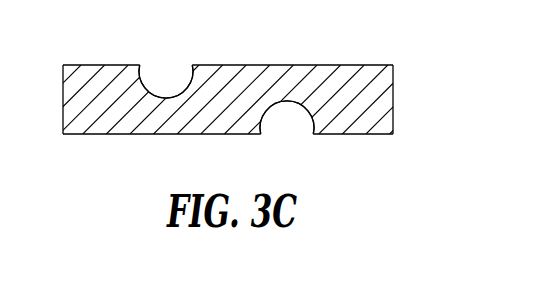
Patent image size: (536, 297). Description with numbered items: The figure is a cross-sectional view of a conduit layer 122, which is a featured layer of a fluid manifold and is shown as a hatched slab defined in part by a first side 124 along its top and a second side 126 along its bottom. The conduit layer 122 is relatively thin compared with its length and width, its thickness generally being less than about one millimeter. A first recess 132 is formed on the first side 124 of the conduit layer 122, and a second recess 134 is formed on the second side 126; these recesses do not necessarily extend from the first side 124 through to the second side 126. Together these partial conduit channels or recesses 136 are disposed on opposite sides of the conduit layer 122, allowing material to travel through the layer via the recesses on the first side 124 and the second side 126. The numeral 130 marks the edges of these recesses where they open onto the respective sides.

The conduit layer 122 is at (395, 98).
The first side 124 is at (320, 64).
The second side 126 is at (158, 135).
The recess edge 130 is at (153, 64).
The first recess 132 is at (187, 64).
The second recess 134 is at (272, 134).
The recesses 136 is at (200, 81).